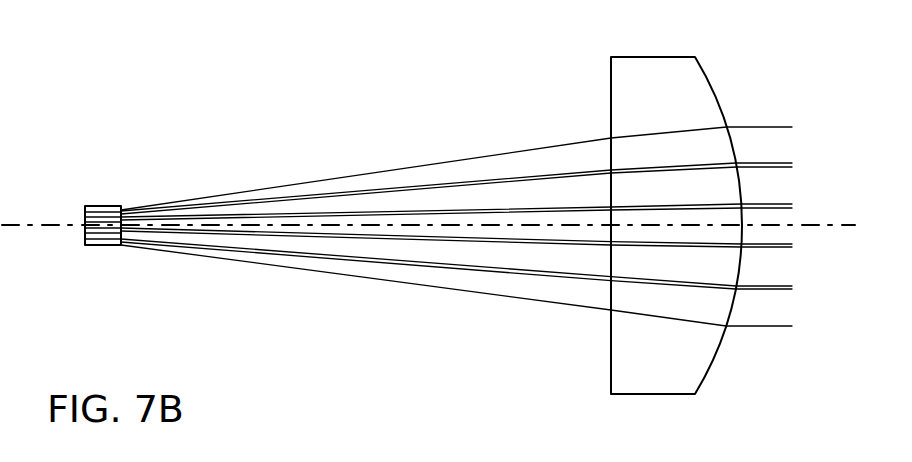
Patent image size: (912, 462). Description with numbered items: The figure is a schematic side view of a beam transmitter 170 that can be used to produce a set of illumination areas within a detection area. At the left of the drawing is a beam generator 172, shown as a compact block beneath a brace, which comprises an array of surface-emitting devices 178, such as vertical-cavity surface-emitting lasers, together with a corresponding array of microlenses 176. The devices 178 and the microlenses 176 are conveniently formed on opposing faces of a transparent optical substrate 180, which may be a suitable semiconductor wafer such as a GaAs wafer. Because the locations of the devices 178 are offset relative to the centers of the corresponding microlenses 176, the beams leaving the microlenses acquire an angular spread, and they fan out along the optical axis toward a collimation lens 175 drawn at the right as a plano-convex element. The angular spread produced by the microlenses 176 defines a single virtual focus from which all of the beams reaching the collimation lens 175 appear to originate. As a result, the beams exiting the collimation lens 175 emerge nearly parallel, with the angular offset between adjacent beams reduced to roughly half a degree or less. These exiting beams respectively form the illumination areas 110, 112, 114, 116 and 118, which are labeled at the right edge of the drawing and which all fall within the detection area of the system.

The illumination area 110 is at (787, 143).
The illumination area 112 is at (788, 185).
The illumination area 114 is at (792, 246).
The illumination area 116 is at (787, 275).
The illumination area 118 is at (787, 315).
The beam transmitter 170 is at (208, 72).
The beam generator 172 is at (153, 254).
The collimation lens 175 is at (611, 93).
The microlenses 176 is at (124, 217).
The surface-emitting devices 178 is at (85, 217).
The transparent optical substrate 180 is at (100, 206).